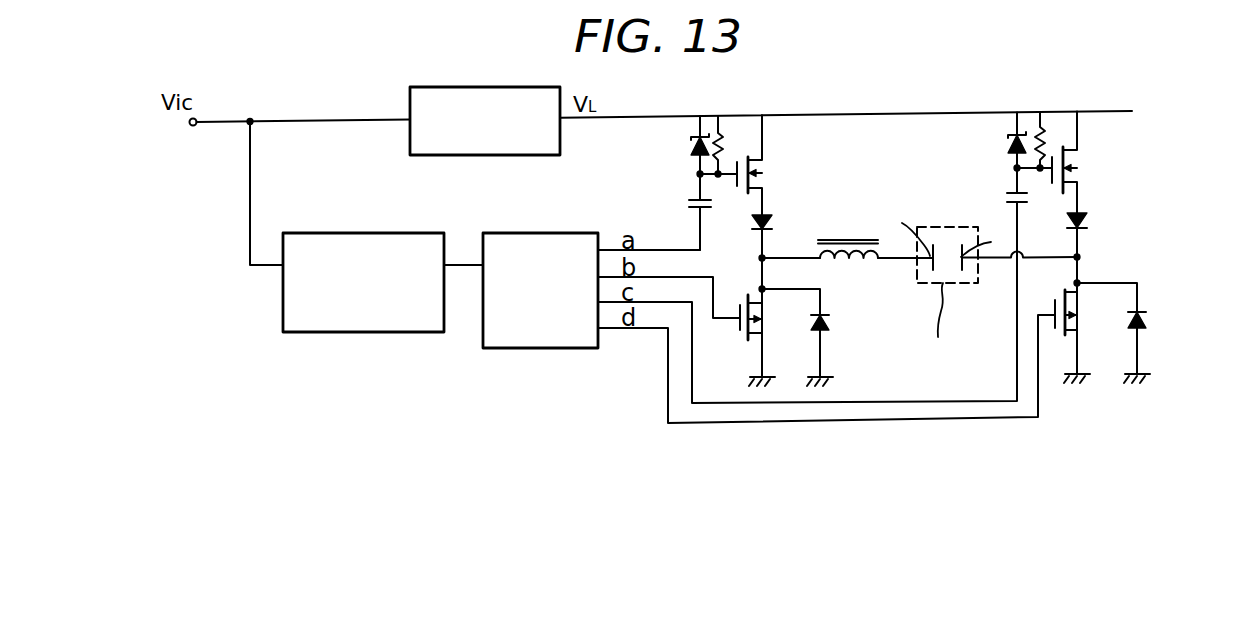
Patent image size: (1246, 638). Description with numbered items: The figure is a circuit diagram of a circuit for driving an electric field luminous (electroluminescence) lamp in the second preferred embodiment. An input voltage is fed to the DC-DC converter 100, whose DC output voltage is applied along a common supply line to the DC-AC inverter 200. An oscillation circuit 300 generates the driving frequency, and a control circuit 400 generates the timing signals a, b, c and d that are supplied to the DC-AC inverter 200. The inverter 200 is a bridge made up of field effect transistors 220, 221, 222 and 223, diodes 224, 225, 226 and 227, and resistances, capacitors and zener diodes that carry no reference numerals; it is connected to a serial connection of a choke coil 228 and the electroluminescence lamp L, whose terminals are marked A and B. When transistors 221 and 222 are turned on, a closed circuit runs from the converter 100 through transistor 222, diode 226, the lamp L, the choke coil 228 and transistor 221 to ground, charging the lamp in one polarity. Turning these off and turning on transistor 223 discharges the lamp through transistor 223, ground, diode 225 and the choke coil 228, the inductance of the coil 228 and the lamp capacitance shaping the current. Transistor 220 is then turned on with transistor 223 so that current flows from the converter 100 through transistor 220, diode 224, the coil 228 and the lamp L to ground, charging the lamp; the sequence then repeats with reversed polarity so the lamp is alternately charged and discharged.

The DC-DC converter 100 is at (482, 155).
The DC-AC inverter 200 is at (868, 138).
The oscillation circuit 300 is at (370, 332).
The control circuit 400 is at (536, 348).
The field effect transistor 220 is at (777, 165).
The field effect transistor 221 is at (776, 337).
The field effect transistor 222 is at (1092, 162).
The field effect transistor 223 is at (1090, 333).
The diode 224 is at (785, 236).
The diode 225 is at (842, 348).
The diode 226 is at (1100, 233).
The diode 227 is at (1158, 344).
The choke coil 228 is at (858, 262).